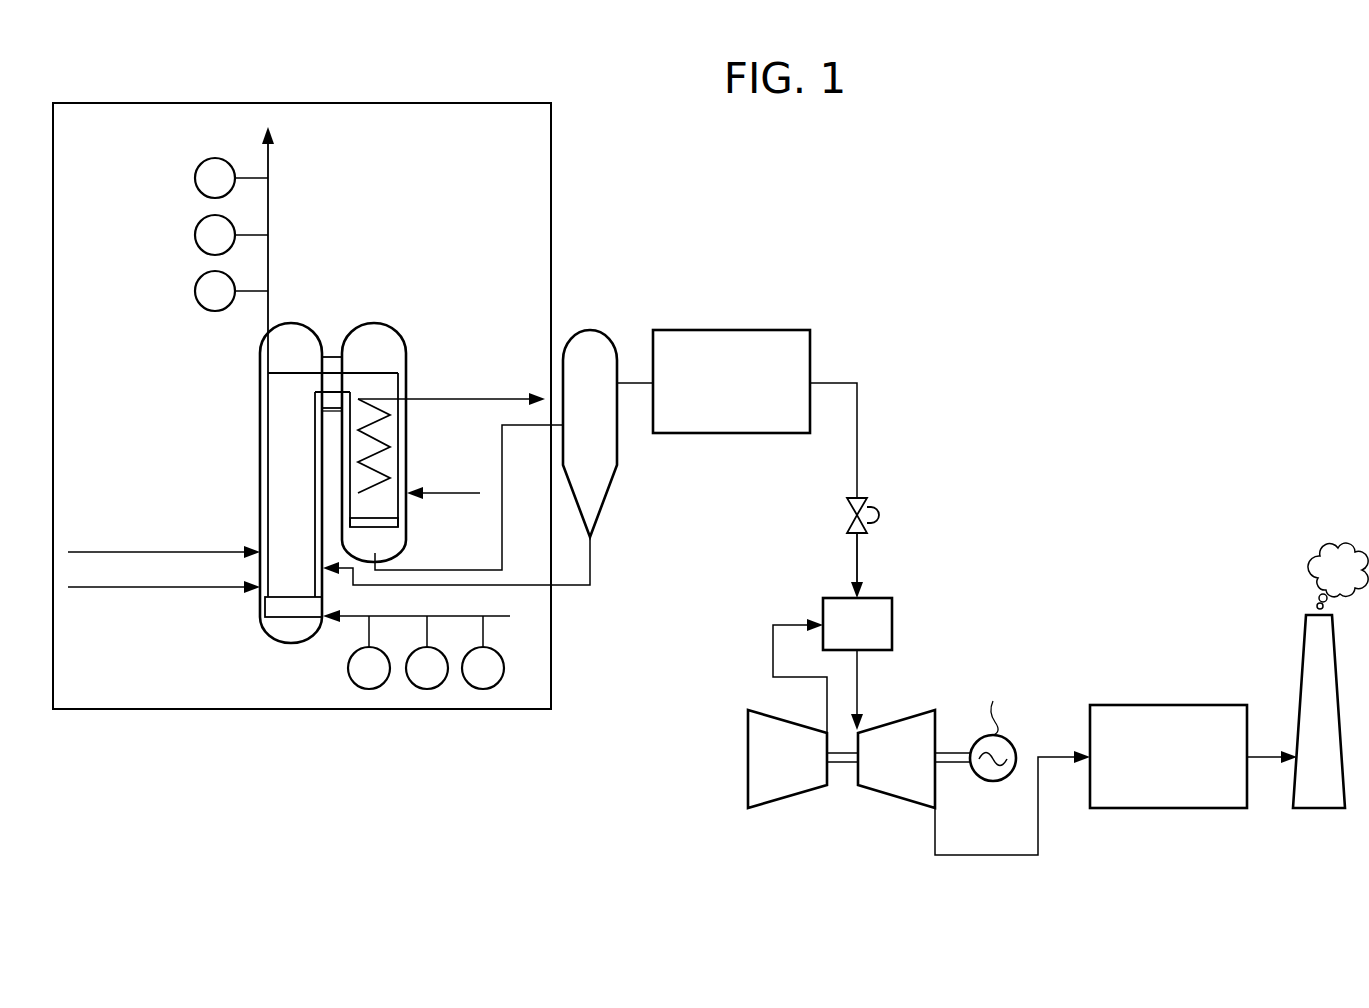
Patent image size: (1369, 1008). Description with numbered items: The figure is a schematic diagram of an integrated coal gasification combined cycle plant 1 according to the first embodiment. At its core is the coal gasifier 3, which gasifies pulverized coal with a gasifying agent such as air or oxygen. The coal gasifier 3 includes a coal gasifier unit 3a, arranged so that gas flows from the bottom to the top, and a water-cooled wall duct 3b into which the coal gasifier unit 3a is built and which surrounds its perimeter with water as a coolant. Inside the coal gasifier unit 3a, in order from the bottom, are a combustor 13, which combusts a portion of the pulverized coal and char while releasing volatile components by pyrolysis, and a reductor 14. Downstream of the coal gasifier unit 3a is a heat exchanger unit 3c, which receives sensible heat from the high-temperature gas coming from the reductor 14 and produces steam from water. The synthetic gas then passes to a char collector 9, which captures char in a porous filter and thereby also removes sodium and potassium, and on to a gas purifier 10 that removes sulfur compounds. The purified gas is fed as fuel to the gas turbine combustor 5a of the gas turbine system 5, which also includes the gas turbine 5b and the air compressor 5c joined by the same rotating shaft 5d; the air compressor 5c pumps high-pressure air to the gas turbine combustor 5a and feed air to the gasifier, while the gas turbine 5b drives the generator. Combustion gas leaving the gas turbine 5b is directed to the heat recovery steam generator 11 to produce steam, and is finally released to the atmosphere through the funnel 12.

The integrated coal gasification combined cycle plant 1 is at (1038, 177).
The coal gasifier 3 is at (337, 406).
The coal gasifier unit 3a is at (258, 393).
The water-cooled wall duct 3b is at (265, 428).
The heat exchanger unit 3c is at (380, 441).
The combustor 13 is at (275, 467).
The reductor 14 is at (292, 390).
The char collector 9 is at (590, 330).
The gas purifier 10 is at (733, 330).
The gas turbine system 5 is at (919, 682).
The gas turbine combustor 5a is at (892, 610).
The gas turbine 5b is at (895, 798).
The air compressor 5c is at (790, 798).
The rotating shaft 5d is at (840, 766).
The heat recovery steam generator 11 is at (1168, 705).
The funnel 12 is at (1306, 640).